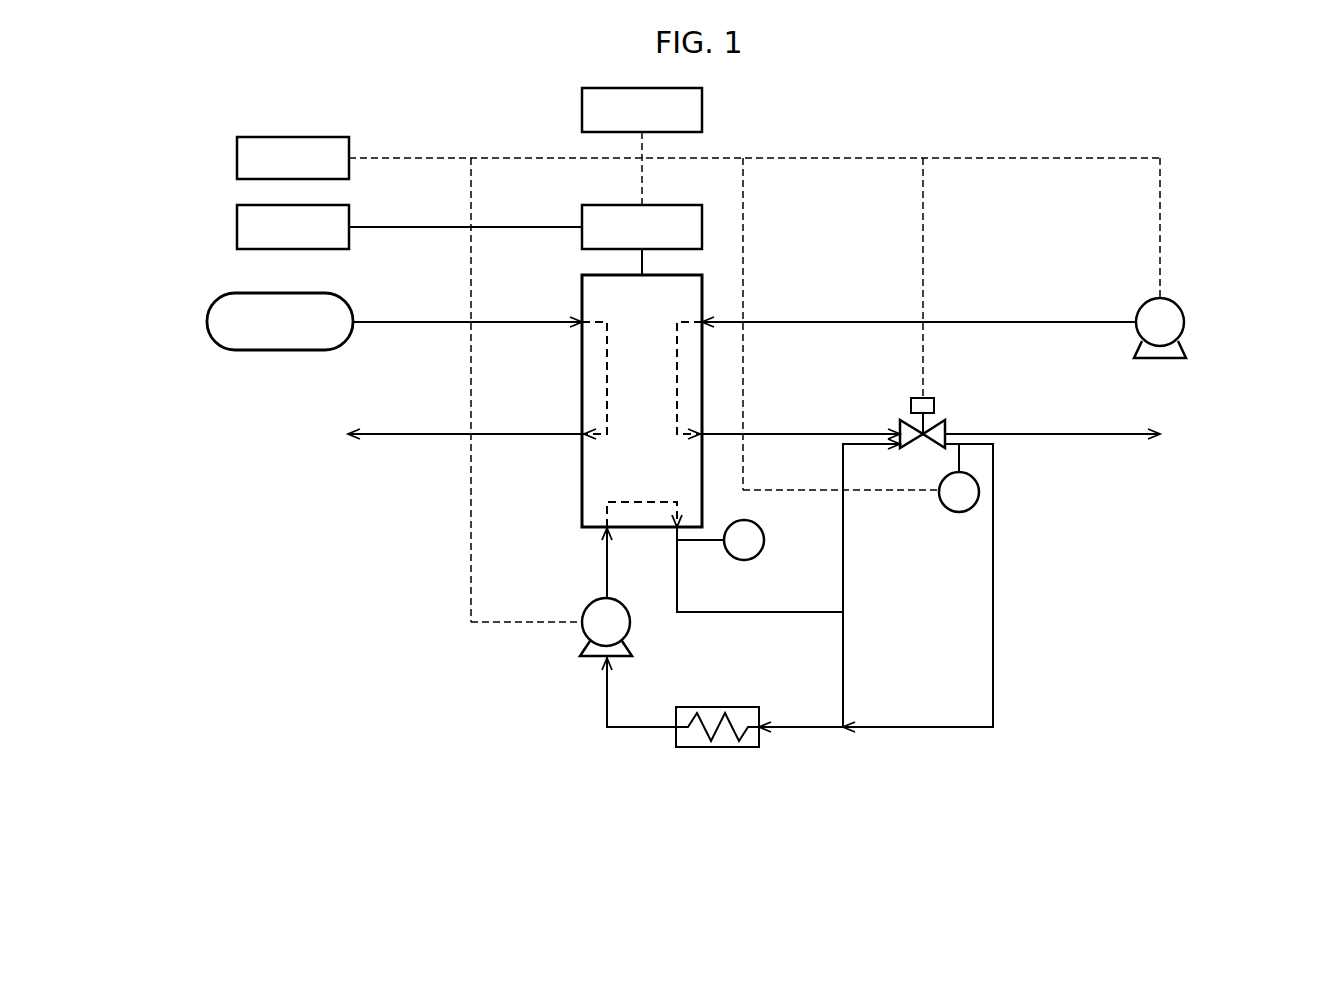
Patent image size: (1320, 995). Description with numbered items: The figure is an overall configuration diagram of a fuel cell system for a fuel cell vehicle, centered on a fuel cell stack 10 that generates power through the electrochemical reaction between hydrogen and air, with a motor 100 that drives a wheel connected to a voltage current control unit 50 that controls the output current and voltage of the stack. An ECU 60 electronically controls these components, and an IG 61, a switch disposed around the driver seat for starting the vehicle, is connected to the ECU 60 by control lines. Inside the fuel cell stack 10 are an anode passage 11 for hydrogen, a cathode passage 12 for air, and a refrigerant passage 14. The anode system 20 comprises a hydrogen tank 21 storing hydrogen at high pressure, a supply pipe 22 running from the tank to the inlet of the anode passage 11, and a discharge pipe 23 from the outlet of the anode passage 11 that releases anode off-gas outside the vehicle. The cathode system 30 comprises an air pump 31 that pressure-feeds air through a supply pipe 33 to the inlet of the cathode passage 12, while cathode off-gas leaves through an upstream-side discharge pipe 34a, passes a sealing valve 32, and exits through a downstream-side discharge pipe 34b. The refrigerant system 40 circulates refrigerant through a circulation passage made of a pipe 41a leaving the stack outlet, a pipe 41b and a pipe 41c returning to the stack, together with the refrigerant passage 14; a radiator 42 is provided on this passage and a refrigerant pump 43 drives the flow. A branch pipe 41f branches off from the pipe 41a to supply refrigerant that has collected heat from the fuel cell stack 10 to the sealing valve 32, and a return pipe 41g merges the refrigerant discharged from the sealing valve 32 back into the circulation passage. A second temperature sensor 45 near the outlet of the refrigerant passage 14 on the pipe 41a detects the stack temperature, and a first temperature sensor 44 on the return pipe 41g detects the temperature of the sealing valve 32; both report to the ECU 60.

The fuel cell stack 10 is at (582, 476).
The anode passage 11 is at (608, 345).
The cathode passage 12 is at (677, 392).
The refrigerant passage 14 is at (650, 500).
The anode system 20 is at (412, 302).
The hydrogen tank 21 is at (230, 295).
The supply pipe 22 is at (392, 325).
The discharge pipe 23 is at (432, 432).
The cathode system 30 is at (1048, 254).
The air pump 31 is at (1178, 300).
The sealing valve 32 is at (934, 405).
The supply pipe 33 is at (795, 320).
The upstream-side discharge pipe 34a is at (796, 430).
The downstream-side discharge pipe 34b is at (1064, 430).
The refrigerant system 40 is at (537, 694).
The pipe 41a is at (748, 614).
The pipe 41b is at (640, 730).
The pipe 41c is at (604, 563).
The branch pipe 41f is at (845, 585).
The return pipe 41g is at (995, 630).
The radiator 42 is at (693, 750).
The refrigerant pump 43 is at (583, 612).
The first temperature sensor 44 is at (946, 511).
The second temperature sensor 45 is at (733, 559).
The voltage current control unit 50 is at (592, 205).
The ECU 60 is at (592, 88).
The IG 61 is at (237, 156).
The motor 100 is at (237, 225).